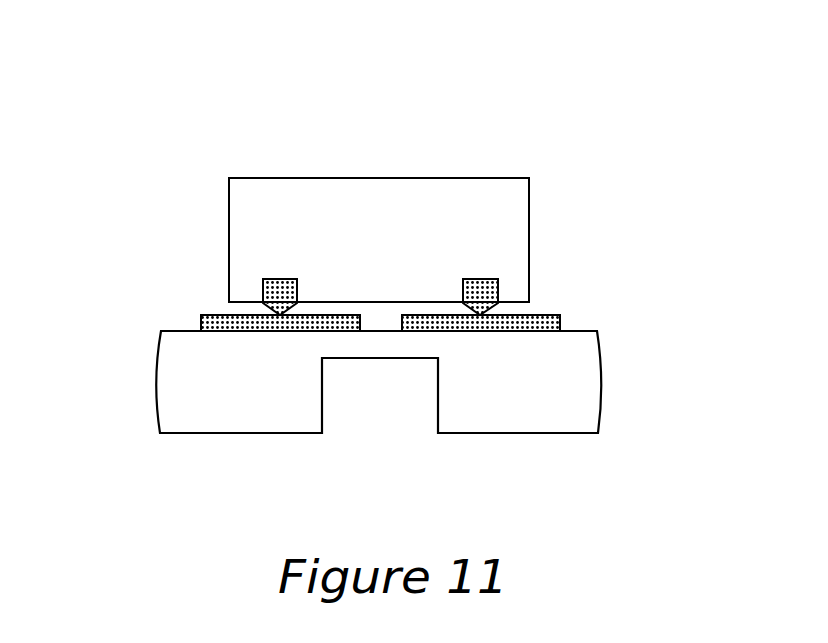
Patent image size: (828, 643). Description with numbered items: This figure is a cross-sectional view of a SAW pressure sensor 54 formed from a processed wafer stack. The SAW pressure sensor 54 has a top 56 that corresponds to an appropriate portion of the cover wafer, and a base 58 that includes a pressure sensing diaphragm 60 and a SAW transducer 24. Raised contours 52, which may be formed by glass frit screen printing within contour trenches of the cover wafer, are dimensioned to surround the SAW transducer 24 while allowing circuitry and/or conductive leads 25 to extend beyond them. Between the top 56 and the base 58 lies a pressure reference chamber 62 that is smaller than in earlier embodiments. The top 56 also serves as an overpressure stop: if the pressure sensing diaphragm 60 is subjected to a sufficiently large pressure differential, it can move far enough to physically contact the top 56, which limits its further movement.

The SAW pressure sensor 54 is at (272, 112).
The top 56 is at (385, 203).
The pressure reference chamber 62 is at (387, 313).
The raised contours 52 is at (279, 300).
The circuitry and/or conductive leads 25 is at (535, 328).
The base 58 is at (177, 380).
The SAW transducer 24 is at (373, 323).
The pressure sensing diaphragm 60 is at (382, 387).